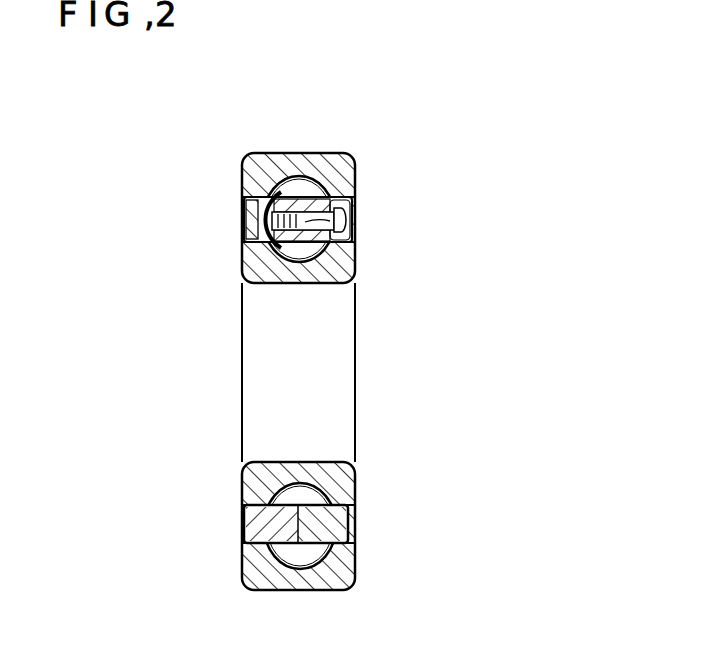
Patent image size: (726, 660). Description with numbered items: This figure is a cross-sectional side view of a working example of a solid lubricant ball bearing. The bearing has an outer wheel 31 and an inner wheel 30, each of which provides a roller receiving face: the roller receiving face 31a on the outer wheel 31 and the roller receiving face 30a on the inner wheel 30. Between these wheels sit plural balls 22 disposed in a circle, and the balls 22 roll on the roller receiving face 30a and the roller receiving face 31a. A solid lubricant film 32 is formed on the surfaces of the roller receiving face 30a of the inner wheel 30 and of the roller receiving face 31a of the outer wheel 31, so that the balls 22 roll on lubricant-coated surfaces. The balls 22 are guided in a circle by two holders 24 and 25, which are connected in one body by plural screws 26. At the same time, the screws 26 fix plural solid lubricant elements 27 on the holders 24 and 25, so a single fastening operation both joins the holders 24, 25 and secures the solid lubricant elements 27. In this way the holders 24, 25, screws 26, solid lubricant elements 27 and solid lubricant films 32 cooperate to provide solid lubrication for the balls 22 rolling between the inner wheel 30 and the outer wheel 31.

The ball 22 is at (253, 163).
The holder 24 is at (243, 213).
The holder 25 is at (348, 195).
The screw 26 is at (358, 250).
The solid lubricant element 27 is at (356, 282).
The inner wheel 30 is at (327, 285).
The roller receiving face 30a is at (290, 258).
The outer wheel 31 is at (340, 168).
The roller receiving face 31a is at (320, 178).
The solid lubricant film 32 is at (292, 178).